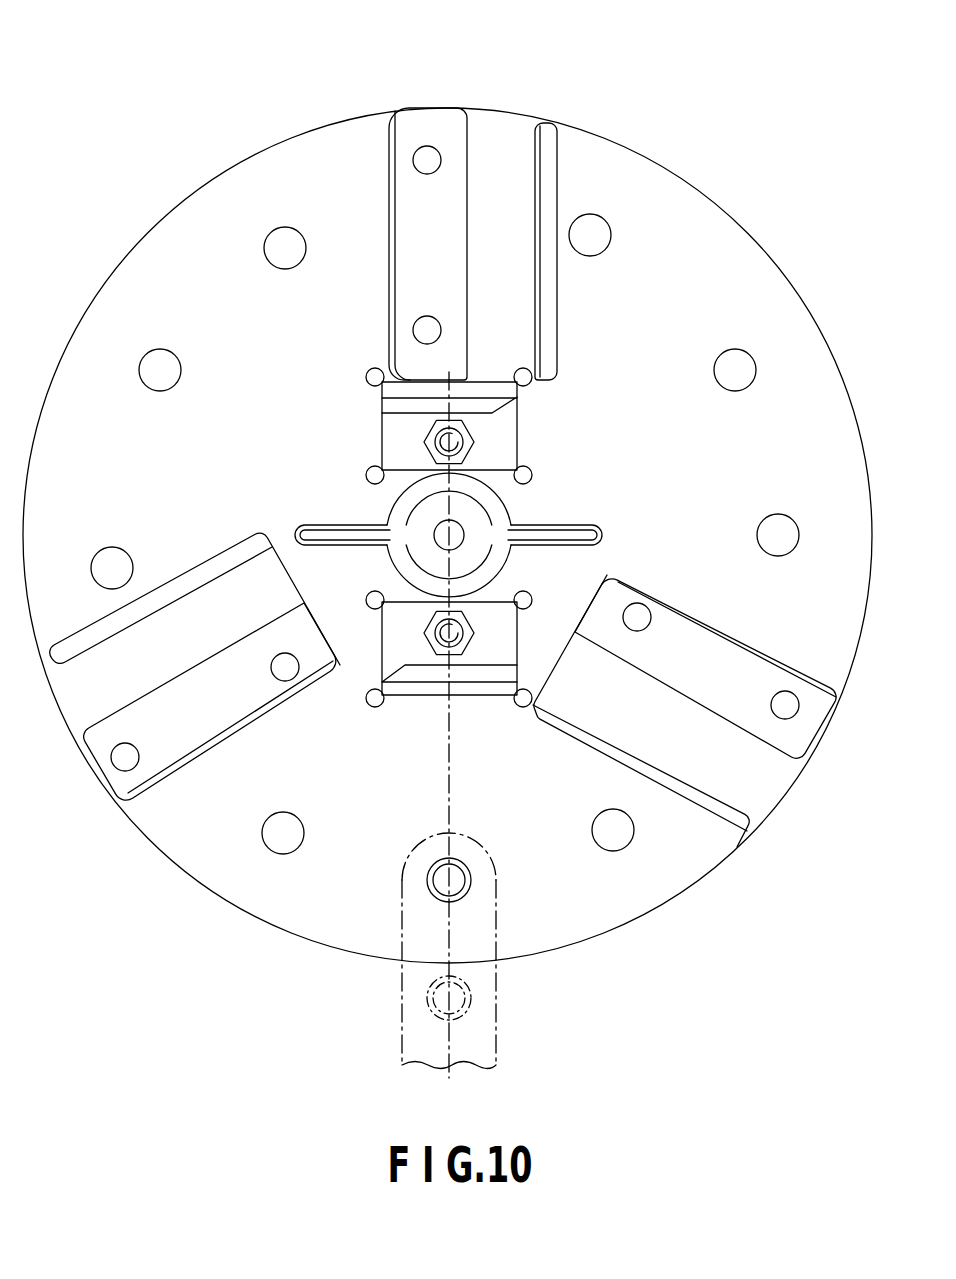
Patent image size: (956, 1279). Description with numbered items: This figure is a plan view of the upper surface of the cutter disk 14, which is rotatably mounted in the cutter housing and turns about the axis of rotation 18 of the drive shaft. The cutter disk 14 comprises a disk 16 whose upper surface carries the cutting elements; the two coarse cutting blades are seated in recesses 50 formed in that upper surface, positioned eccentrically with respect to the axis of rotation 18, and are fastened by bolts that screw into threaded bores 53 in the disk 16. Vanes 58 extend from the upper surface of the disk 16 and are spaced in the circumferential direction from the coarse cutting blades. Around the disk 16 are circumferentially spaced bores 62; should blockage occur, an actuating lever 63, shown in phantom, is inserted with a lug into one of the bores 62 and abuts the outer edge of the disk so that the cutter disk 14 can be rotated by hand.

The cutter disk 14 is at (365, 106).
The disk 16 is at (231, 193).
The axis of rotation 18 is at (450, 535).
The recesses 50 is at (383, 426).
The threaded bores 53 is at (440, 647).
The vanes 58 is at (571, 536).
The bores 62 is at (458, 882).
The actuating lever 63 is at (414, 1000).